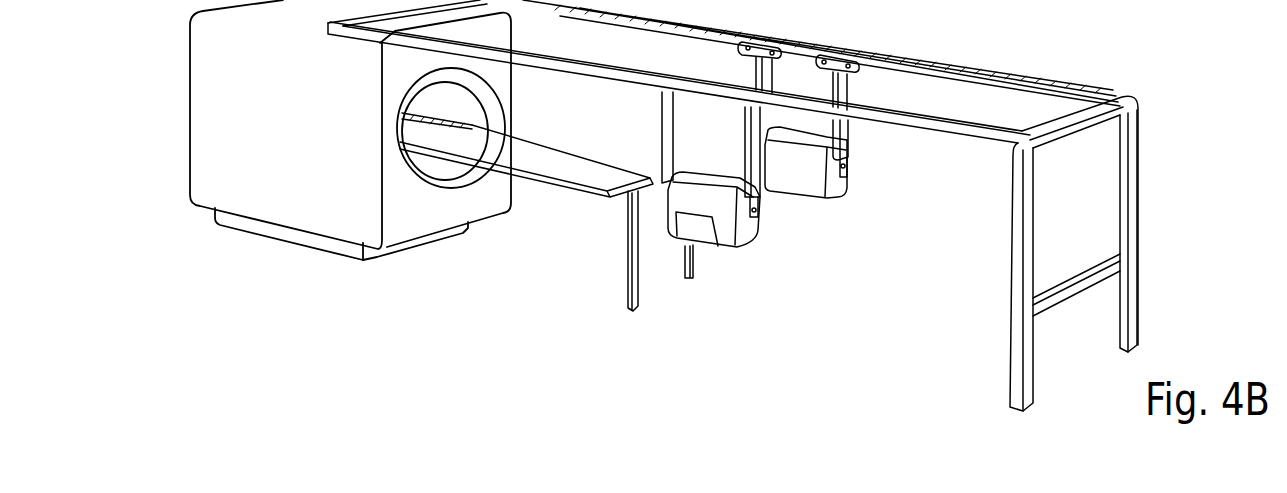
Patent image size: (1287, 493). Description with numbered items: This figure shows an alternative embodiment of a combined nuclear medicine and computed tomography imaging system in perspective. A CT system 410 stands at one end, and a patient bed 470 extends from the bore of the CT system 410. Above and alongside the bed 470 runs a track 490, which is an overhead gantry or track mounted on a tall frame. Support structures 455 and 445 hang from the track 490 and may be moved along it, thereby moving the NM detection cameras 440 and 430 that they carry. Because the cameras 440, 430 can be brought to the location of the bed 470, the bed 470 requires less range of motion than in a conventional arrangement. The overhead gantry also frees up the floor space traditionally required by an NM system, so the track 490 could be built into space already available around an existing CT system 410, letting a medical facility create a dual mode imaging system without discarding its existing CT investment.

The CT system 410 is at (178, 75).
The NM detection camera 430 is at (840, 190).
The NM detection camera 440 is at (742, 232).
The support structure 445 is at (672, 116).
The support structure 455 is at (850, 130).
The bed 470 is at (548, 157).
The track 490 is at (945, 116).